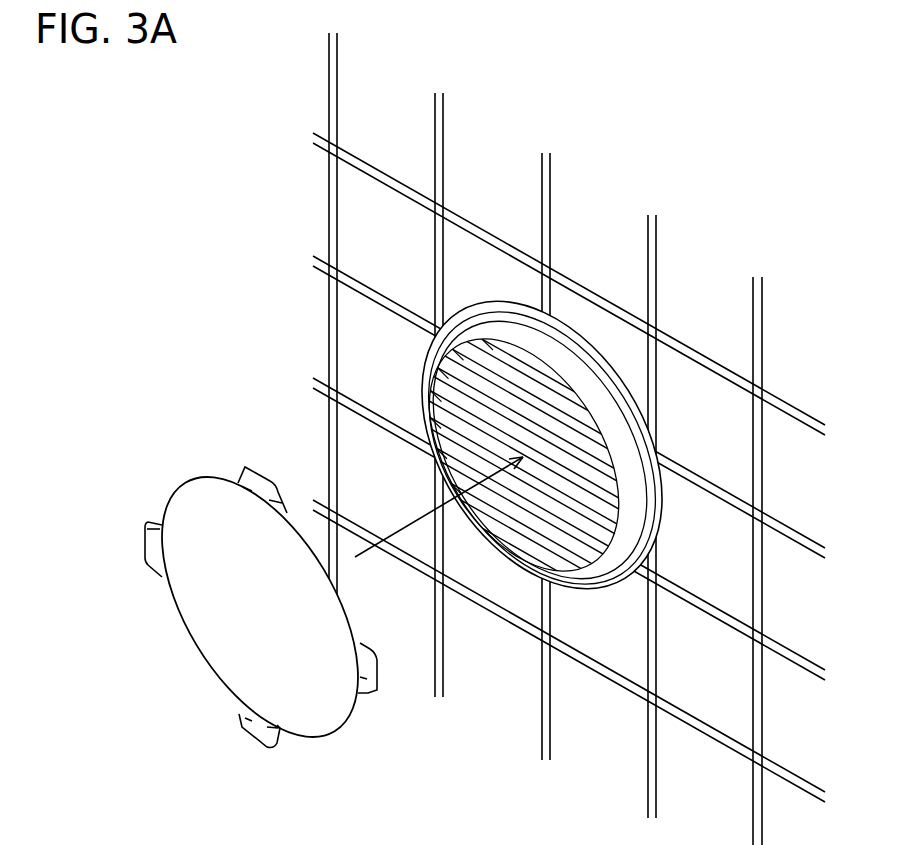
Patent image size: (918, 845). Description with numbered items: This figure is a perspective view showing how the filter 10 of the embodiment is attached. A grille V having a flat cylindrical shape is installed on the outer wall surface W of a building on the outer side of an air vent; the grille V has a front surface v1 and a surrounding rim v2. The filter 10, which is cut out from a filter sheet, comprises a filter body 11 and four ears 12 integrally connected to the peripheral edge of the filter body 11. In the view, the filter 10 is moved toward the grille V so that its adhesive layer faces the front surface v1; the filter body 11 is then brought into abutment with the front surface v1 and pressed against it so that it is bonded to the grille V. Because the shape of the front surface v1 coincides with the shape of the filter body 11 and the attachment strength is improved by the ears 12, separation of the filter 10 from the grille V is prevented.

The outer wall surface W is at (488, 185).
The grille V is at (538, 420).
The front surface v1 is at (516, 363).
The frame of ventilation grille v2 is at (627, 413).
The filter 10 is at (235, 607).
The filter body 11 is at (208, 653).
The ears 12 is at (152, 550).